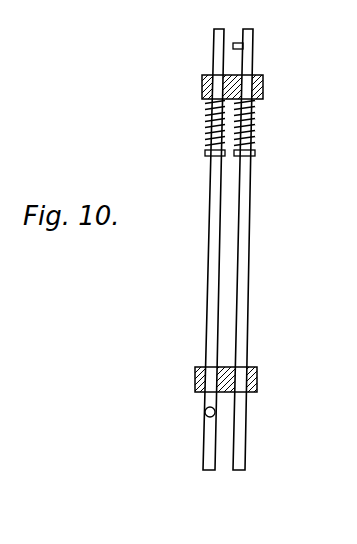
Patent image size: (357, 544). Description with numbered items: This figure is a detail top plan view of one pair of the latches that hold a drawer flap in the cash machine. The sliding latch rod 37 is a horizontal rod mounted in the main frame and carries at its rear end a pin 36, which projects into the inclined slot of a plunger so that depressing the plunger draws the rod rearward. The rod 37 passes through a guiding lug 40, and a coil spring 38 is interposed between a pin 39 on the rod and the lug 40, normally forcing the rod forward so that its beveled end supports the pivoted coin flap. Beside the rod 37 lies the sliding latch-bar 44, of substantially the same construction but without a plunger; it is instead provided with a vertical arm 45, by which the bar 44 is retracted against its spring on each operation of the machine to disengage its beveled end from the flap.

The pin 36 is at (253, 46).
The sliding latch rod 37 is at (249, 242).
The coil spring 38 is at (205, 123).
The pin 39 is at (222, 156).
The guiding lug 40 is at (263, 87).
The sliding latch-bar 44 is at (207, 295).
The vertical arm 45 is at (205, 411).